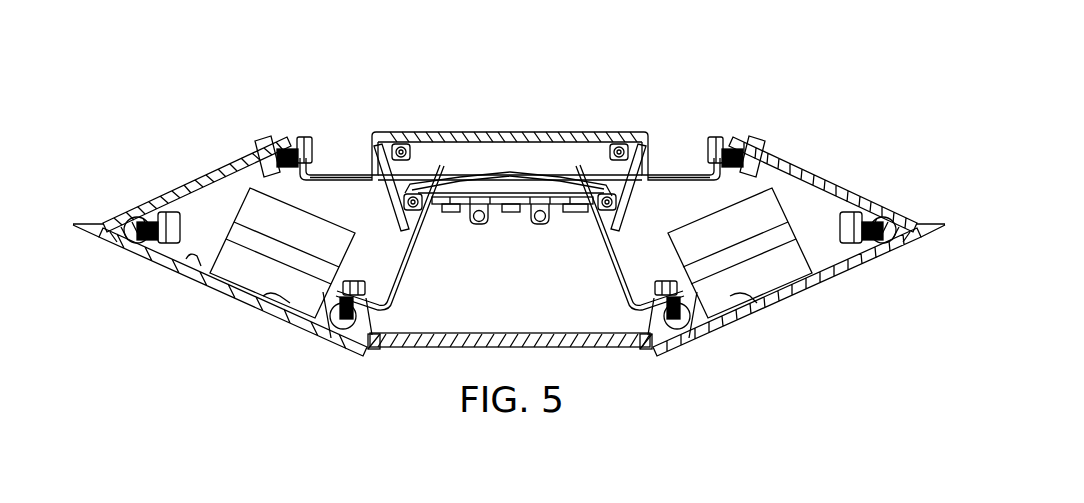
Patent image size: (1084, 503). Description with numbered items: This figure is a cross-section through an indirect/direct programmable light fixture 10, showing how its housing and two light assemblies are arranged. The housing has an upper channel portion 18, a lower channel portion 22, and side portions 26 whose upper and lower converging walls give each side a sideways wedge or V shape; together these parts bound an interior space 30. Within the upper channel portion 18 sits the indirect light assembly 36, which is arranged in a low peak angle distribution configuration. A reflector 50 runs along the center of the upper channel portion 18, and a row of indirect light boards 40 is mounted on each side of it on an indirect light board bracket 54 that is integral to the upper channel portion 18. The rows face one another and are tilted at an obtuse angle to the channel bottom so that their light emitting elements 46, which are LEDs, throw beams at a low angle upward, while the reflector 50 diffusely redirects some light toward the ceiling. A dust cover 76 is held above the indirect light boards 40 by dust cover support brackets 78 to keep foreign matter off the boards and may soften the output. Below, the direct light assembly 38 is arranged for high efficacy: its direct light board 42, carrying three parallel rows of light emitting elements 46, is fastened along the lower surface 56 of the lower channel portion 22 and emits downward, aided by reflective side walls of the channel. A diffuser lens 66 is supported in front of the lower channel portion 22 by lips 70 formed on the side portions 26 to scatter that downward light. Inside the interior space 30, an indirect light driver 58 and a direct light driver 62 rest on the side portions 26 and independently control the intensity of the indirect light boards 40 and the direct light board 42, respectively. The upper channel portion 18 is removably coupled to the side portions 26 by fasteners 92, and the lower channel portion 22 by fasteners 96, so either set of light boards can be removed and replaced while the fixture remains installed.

The light fixture 10 is at (138, 76).
The upper channel portion 18 is at (327, 168).
The lower channel portion 22 is at (407, 282).
The side portions 26 is at (110, 232).
The interior space 30 is at (190, 255).
The indirect light assembly 36 is at (507, 86).
The direct light assembly 38 is at (589, 368).
The indirect light boards 40 is at (388, 143).
The direct light board 42 is at (493, 204).
The light emitting elements 46 is at (396, 190).
The reflector 50 is at (507, 172).
The indirect light board bracket 54 is at (395, 202).
The lower surface 56 is at (557, 199).
The indirect light driver 58 is at (240, 275).
The direct light driver 62 is at (743, 277).
The diffuser lens 66 is at (437, 348).
The lips 70 is at (390, 349).
The dust cover 76 is at (540, 130).
The dust cover support brackets 78 is at (374, 132).
The fasteners 92 is at (721, 132).
The fasteners 96 is at (327, 330).